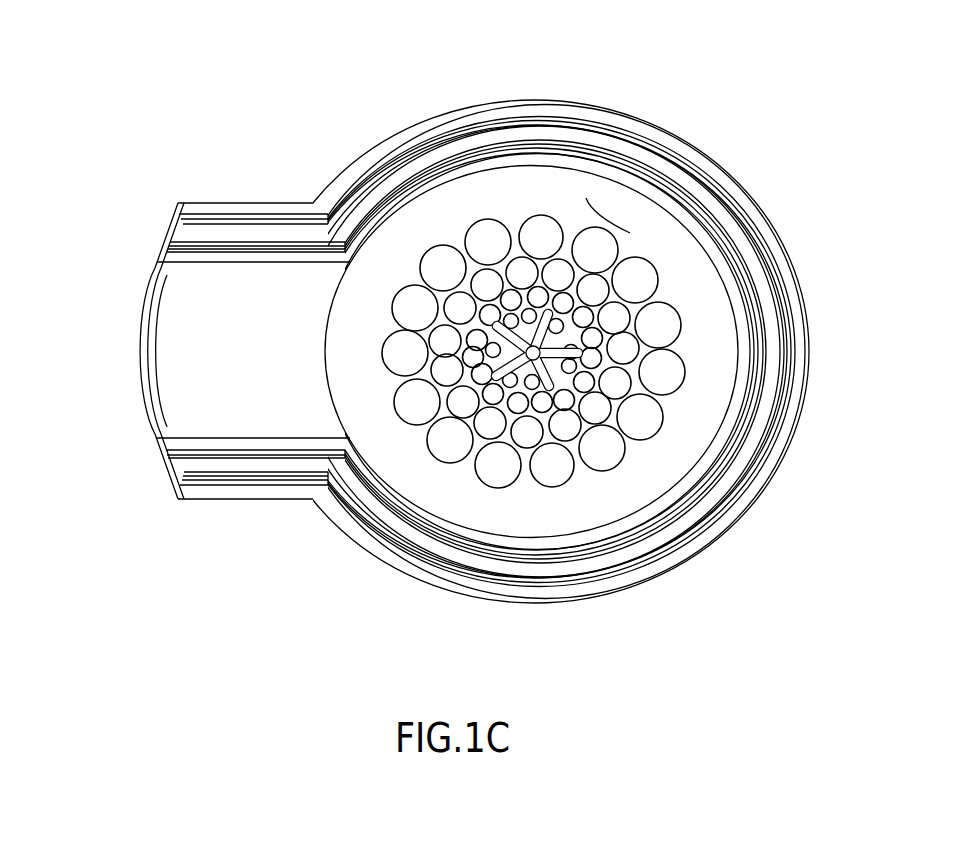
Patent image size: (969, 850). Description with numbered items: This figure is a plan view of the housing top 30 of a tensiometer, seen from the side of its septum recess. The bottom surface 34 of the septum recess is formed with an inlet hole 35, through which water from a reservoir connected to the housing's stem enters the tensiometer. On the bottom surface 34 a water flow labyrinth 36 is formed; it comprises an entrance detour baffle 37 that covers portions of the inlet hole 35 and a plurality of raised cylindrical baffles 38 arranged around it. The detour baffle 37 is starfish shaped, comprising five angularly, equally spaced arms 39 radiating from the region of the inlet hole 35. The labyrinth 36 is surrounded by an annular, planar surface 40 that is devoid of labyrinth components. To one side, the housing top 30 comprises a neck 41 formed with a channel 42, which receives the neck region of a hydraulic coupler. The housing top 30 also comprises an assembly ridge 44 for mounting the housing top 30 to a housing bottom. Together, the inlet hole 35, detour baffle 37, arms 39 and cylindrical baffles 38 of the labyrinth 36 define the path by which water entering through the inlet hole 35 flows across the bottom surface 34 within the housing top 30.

The housing top 30 is at (360, 108).
The bottom surface 34 is at (335, 518).
The inlet hole 35 is at (524, 336).
The water flow labyrinth 36 is at (590, 195).
The detour baffle 37 is at (545, 340).
The raised cylindrical baffles 38 is at (522, 452).
The arms 39 is at (567, 427).
The annular planar surface 40 is at (473, 207).
The neck 41 is at (262, 188).
The channel 42 is at (176, 413).
The assembly ridge 44 is at (218, 236).